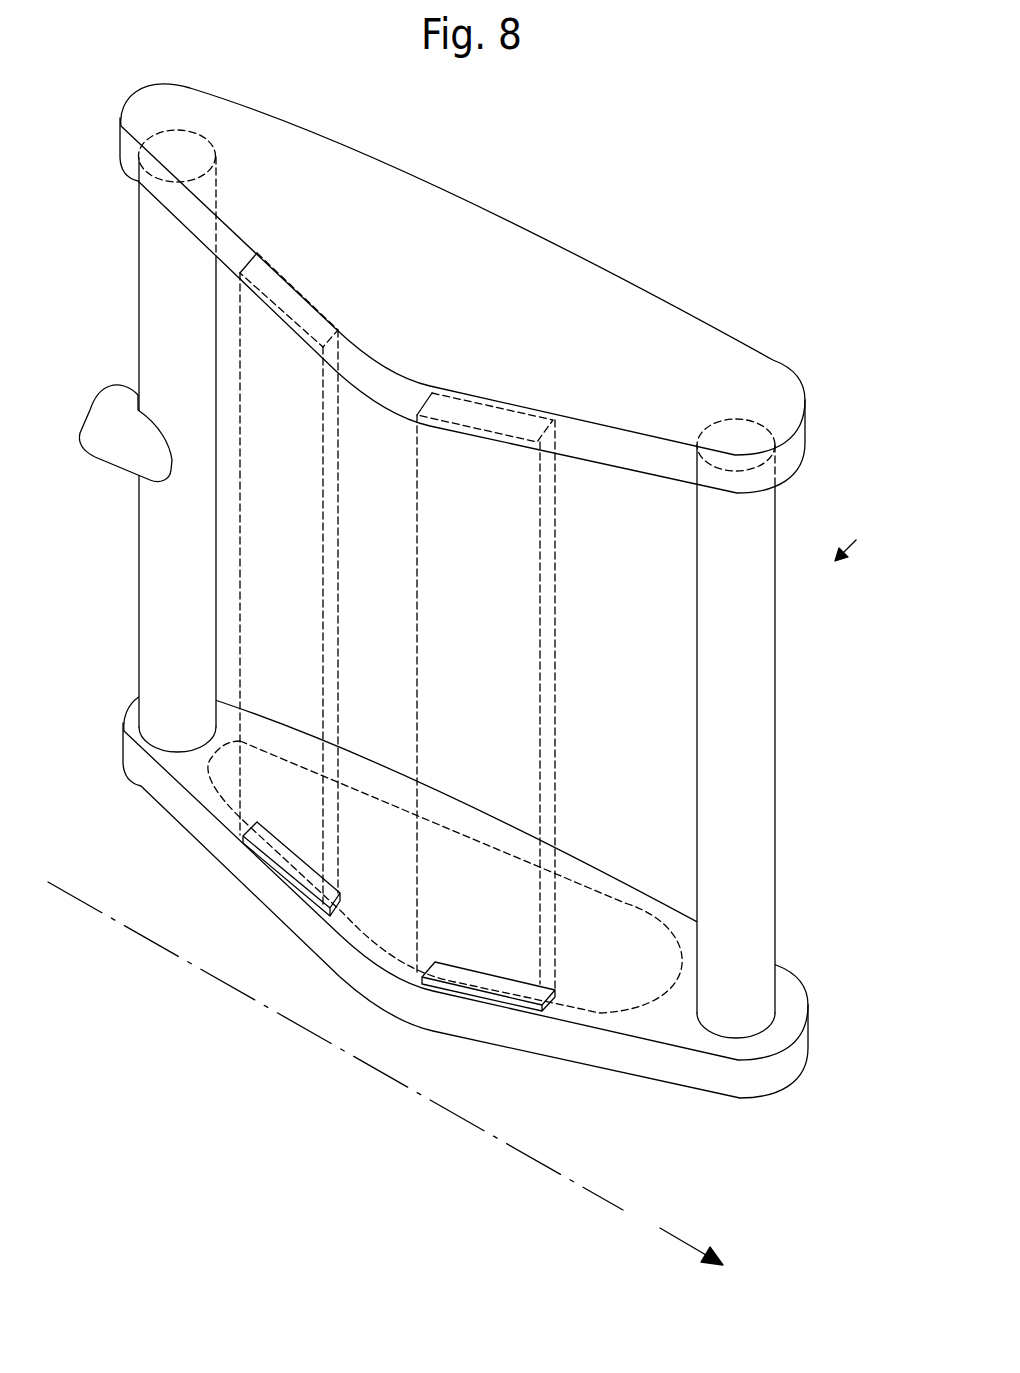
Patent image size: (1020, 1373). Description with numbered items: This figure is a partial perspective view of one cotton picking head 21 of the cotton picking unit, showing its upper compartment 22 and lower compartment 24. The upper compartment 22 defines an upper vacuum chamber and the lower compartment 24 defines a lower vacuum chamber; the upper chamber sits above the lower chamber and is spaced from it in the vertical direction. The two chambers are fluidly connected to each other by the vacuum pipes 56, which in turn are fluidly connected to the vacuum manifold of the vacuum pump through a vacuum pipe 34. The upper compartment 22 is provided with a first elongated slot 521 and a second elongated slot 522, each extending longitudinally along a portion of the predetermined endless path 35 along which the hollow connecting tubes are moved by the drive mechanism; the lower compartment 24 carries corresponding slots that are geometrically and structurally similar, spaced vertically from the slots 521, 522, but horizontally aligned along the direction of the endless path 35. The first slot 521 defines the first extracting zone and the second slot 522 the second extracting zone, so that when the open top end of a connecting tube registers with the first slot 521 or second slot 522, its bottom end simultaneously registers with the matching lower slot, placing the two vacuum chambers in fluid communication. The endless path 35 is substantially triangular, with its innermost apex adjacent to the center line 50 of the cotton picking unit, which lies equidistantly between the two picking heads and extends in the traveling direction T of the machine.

The cotton picking head 21 is at (856, 540).
The upper compartment 22 is at (592, 270).
The lower compartment 24 is at (158, 800).
The vacuum pipe 34 is at (98, 400).
The predetermined endless path 35 is at (368, 940).
The center line 50 is at (597, 1193).
The first elongated slot 521 is at (455, 988).
The second elongated slot 522 is at (257, 848).
The vacuum pipe 56 is at (140, 283).
The traveling direction T is at (678, 1237).